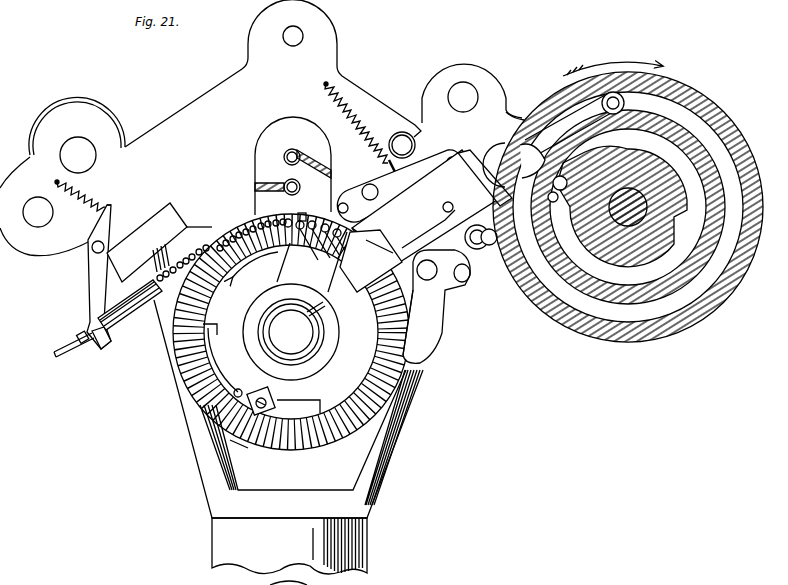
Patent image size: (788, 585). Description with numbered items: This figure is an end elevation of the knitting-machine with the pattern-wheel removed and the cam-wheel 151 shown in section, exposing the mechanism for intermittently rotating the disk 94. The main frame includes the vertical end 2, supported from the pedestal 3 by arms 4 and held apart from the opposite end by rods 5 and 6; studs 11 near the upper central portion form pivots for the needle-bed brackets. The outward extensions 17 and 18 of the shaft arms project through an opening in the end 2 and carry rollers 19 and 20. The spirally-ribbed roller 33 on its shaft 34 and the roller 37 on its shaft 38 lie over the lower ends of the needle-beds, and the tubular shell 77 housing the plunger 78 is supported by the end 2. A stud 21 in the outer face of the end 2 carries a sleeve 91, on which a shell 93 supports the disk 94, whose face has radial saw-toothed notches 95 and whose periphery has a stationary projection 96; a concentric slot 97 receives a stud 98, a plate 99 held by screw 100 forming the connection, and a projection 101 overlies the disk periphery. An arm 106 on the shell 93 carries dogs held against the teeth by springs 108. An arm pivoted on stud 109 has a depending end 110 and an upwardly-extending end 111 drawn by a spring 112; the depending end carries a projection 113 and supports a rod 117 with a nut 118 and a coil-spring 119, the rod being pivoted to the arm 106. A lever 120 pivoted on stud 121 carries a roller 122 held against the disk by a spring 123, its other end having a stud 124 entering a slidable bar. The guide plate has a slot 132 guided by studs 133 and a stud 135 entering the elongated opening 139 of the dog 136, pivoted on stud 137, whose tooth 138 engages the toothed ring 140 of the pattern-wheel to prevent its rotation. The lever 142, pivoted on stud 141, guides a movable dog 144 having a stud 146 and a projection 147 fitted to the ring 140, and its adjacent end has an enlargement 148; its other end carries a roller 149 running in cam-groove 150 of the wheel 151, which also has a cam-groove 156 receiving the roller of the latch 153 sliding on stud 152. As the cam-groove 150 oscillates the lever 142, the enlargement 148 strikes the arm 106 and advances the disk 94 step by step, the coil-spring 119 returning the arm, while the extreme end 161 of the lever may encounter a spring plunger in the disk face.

The vertical end 2 is at (261, 128).
The pedestal 3 is at (289, 551).
The arms 4 is at (288, 409).
The rod 5 is at (38, 212).
The rod 6 is at (463, 97).
The studs 11 is at (293, 36).
The outward extension 17 is at (269, 178).
The outward extension 18 is at (314, 158).
The roller 19 is at (300, 187).
The roller 20 is at (290, 150).
The stud 21 is at (291, 332).
The roller 33 is at (77, 123).
The shaft 34 is at (78, 155).
The roller 37 is at (516, 108).
The shaft 38 is at (492, 156).
The tubular shell 77 is at (429, 125).
The plunger 78 is at (399, 137).
The sleeve 91 is at (324, 303).
The shell 93 is at (326, 308).
The disk 94 is at (357, 328).
The radial saw-toothed notches 95 is at (343, 379).
The stationary projection 96 is at (300, 210).
The concentric slot 97 is at (219, 327).
The stud 98 is at (253, 390).
The plate 99 is at (247, 386).
The screw 100 is at (270, 400).
The projection 101 is at (252, 440).
The arm 106 is at (284, 262).
The spring 108 is at (315, 239).
The stud 109 is at (94, 242).
The depending end 110 is at (97, 280).
The upwardly-extending end 111 is at (121, 210).
The spring 112 is at (81, 195).
The projection 113 is at (99, 345).
The rod 117 is at (67, 348).
The nut 118 is at (75, 331).
The coil-spring 119 is at (192, 266).
The lever 120 is at (399, 186).
The stud 121 is at (372, 192).
The roller 122 is at (339, 196).
The spring 123 is at (363, 133).
The stud 124 is at (452, 151).
The slot 132 is at (493, 243).
The studs 133 is at (472, 241).
The stud 135 is at (465, 280).
The dog 136 is at (422, 322).
The stud 137 is at (428, 270).
The tooth 138 is at (412, 380).
The elongated opening 139 is at (436, 306).
The ring 140 is at (409, 394).
The stud 141 is at (532, 161).
The lever 142 is at (485, 178).
The movable dog 144 is at (424, 206).
The stud 146 is at (449, 215).
The projection 147 is at (379, 250).
The enlargement 148 is at (366, 234).
The roller 149 is at (593, 109).
The cam-groove 150 is at (628, 207).
The wheel 151 is at (628, 207).
The stud 152 is at (556, 206).
The latch 153 is at (550, 190).
The cam-groove 156 is at (622, 210).
The extreme end 161 is at (371, 261).